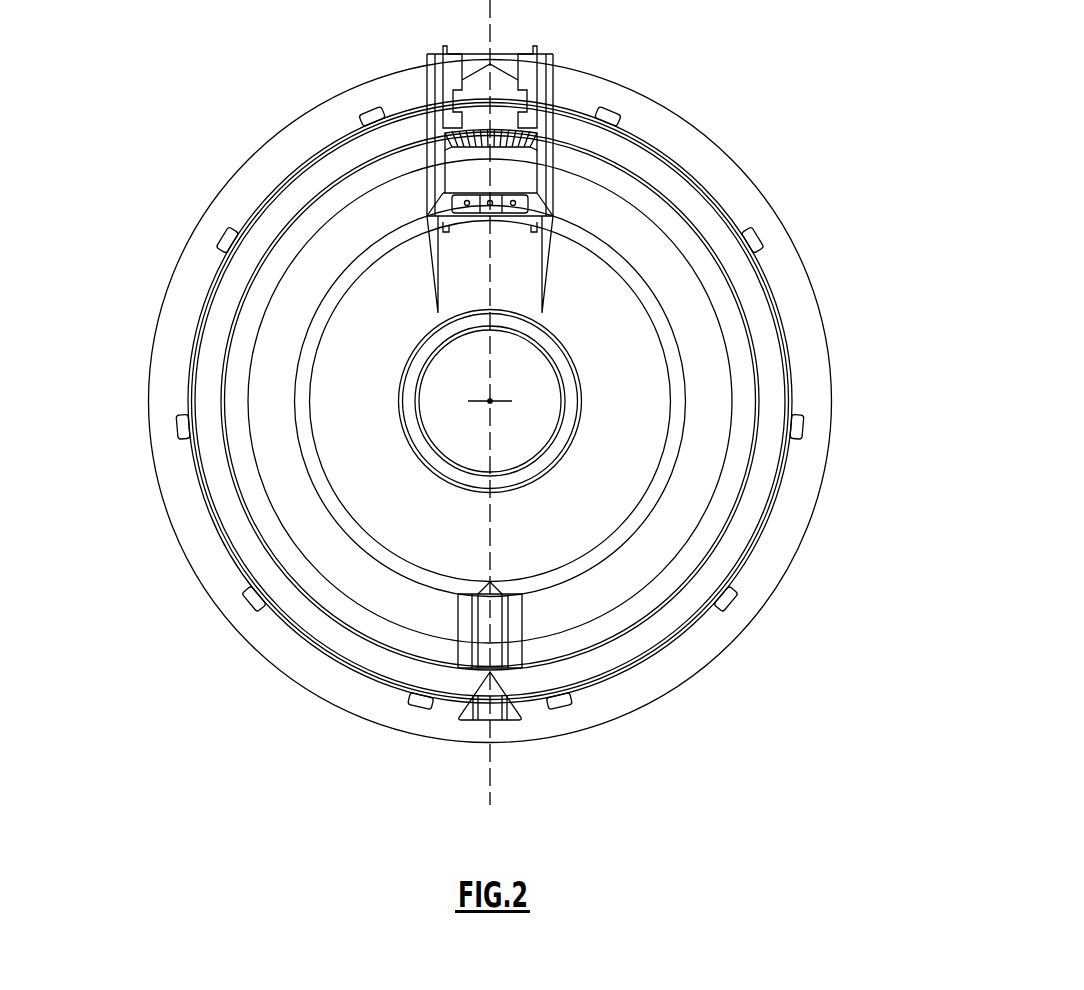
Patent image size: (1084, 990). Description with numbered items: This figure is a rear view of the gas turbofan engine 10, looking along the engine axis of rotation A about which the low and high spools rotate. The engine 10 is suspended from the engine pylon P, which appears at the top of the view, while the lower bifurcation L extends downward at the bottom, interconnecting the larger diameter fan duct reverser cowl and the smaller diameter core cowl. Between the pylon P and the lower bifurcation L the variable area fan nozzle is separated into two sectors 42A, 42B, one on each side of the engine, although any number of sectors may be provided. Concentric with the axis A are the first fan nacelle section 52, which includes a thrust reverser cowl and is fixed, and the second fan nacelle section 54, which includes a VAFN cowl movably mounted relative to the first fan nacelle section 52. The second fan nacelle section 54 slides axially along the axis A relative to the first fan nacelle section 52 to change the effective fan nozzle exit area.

The gas turbofan engine 10 is at (497, 402).
The first sector of the VAFN 42A is at (146, 273).
The second sector of the VAFN 42B is at (915, 268).
The first fan nacelle section 52 is at (738, 193).
The second fan nacelle section 54 is at (783, 390).
The engine pylon P is at (553, 75).
The lower bifurcation L is at (502, 655).
The engine axis of rotation A is at (493, 404).